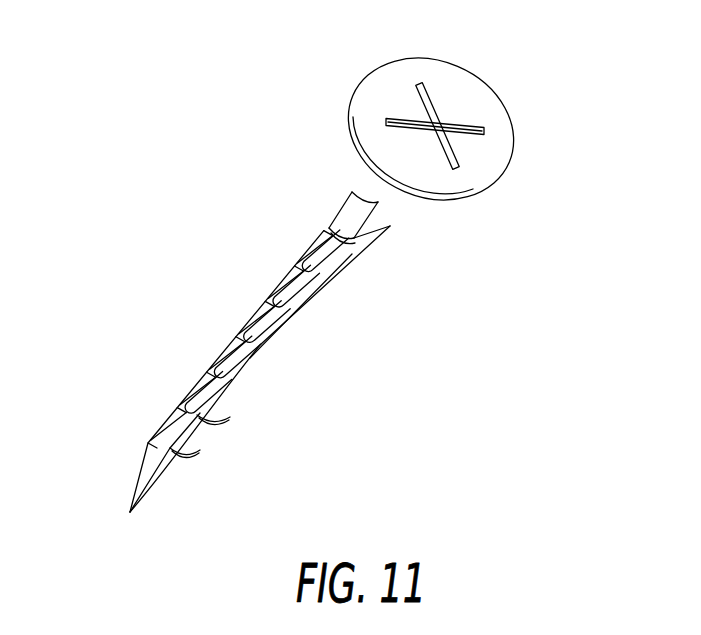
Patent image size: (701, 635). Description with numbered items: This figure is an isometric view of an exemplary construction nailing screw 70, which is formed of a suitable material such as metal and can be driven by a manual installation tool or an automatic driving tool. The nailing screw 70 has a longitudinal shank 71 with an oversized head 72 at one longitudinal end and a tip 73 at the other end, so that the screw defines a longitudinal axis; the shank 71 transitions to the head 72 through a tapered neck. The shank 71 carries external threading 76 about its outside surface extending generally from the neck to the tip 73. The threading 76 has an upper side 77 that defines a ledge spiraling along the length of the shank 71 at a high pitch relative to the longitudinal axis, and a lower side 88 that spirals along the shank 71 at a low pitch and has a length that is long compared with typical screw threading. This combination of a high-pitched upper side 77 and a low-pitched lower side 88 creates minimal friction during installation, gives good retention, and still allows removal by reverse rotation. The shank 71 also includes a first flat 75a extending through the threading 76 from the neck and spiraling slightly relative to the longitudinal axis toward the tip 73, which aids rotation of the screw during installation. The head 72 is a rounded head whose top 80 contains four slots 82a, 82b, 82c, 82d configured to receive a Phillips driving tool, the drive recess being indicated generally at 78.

The nailing screw 70 is at (175, 93).
The shank 71 is at (329, 301).
The head 72 is at (513, 148).
The tip 73 is at (130, 512).
The first flat 75a is at (370, 247).
The threading 76 is at (277, 371).
The upper side 77 is at (302, 255).
The drive recess 78 is at (447, 112).
The top 80 is at (463, 90).
The slot 82a is at (492, 104).
The slot 82b is at (496, 182).
The slot 82c is at (357, 133).
The slot 82d is at (410, 100).
The lower side 88 is at (232, 412).